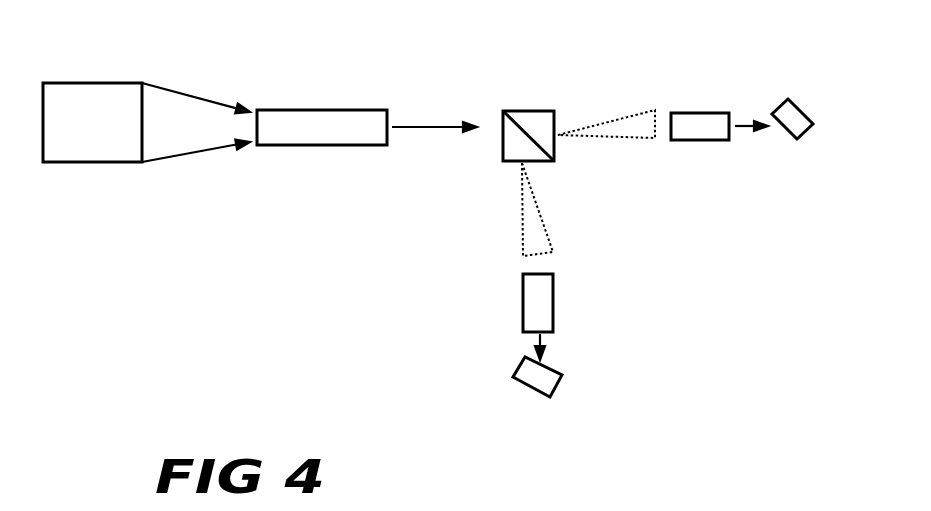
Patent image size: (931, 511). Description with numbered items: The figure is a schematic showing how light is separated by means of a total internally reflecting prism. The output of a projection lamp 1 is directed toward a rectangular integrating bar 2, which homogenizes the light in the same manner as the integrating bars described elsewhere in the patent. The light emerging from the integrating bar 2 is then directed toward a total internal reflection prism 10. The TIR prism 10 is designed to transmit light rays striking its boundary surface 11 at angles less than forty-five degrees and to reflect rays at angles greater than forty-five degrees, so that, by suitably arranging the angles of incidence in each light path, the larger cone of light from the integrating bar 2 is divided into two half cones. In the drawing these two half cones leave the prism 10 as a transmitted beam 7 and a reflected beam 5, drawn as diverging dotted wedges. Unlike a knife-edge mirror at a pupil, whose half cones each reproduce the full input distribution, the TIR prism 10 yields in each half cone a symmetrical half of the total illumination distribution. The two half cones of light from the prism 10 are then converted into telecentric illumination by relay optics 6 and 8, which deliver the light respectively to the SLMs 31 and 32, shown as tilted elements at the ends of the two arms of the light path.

The projection lamp 1 is at (80, 83).
The rectangular integrating bar 2 is at (302, 110).
The reflected light beam 5 is at (523, 220).
The relay optics 6 is at (553, 295).
The transmitted light beam 7 is at (627, 118).
The relay optics 8 is at (697, 113).
The total internal reflection (TIR) prism 10 is at (518, 98).
The boundary surface 11 is at (533, 118).
The SLM 31 is at (525, 386).
The SLM 32 is at (800, 118).